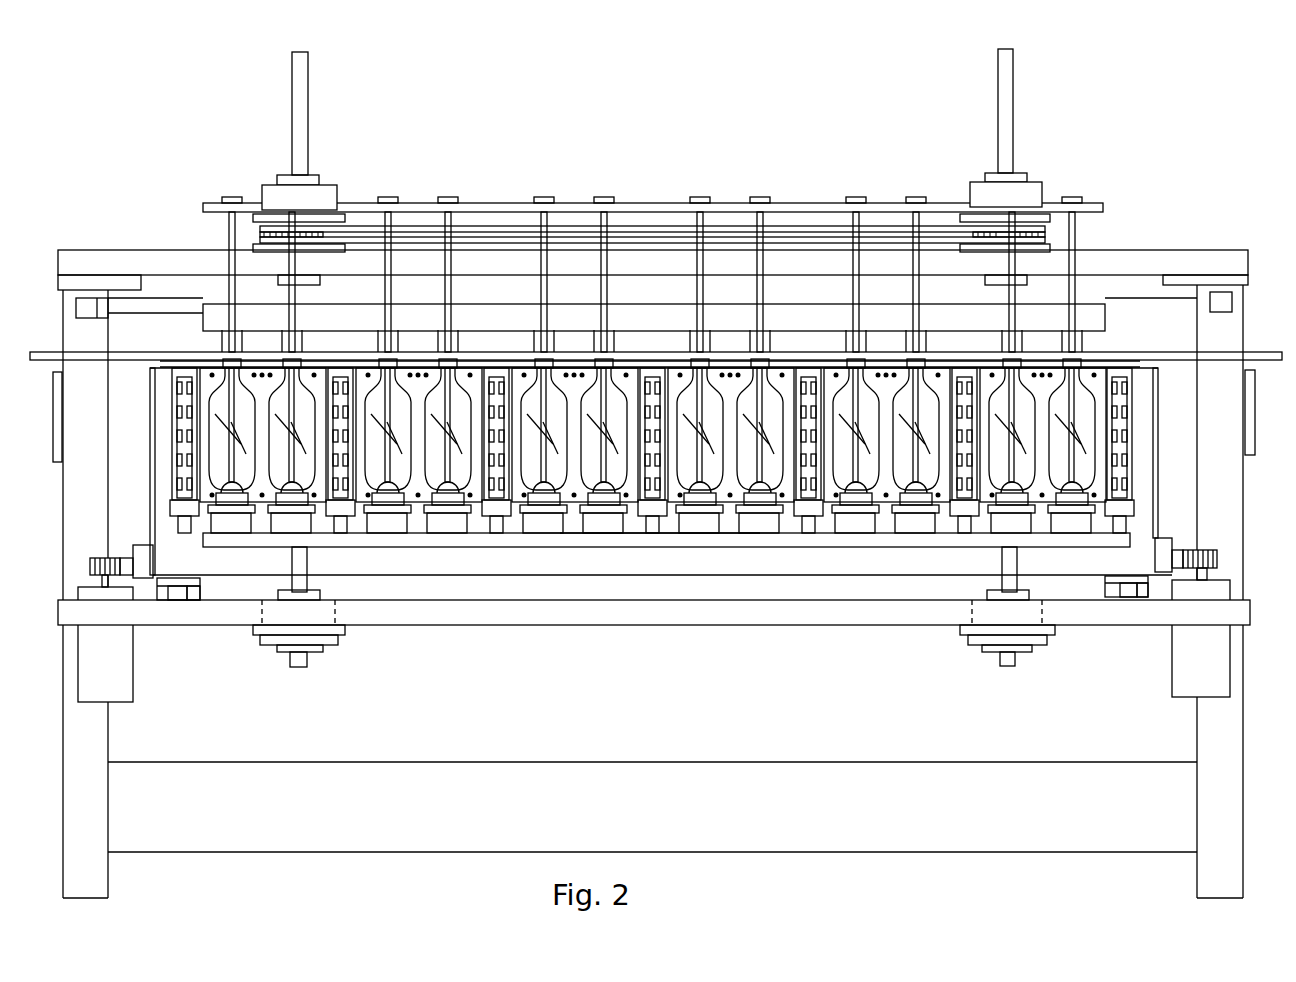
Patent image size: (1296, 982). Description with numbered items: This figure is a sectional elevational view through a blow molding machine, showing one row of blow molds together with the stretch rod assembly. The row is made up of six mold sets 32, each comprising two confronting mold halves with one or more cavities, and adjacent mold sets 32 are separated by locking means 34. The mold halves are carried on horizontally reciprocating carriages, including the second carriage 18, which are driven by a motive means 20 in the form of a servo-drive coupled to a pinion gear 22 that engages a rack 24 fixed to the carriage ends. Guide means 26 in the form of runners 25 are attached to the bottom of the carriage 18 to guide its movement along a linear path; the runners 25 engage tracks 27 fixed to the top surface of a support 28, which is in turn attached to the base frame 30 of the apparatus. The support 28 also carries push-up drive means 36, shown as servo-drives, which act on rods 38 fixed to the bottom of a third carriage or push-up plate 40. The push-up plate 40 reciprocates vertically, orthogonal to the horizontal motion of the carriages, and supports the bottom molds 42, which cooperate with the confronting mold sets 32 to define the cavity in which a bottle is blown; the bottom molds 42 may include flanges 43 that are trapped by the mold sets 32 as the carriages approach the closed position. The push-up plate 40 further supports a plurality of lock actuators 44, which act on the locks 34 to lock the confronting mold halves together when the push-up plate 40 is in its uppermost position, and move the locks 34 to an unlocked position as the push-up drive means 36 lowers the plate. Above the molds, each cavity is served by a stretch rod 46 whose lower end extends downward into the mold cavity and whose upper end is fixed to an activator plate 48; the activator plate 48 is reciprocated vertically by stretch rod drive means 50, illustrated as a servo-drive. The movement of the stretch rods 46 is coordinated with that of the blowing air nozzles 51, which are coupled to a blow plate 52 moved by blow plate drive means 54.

The second carriage 18 is at (1150, 460).
The motive means 20 is at (120, 693).
The pinion gear 22 is at (95, 556).
The rack 24 is at (130, 545).
The runners 25 is at (190, 600).
The guide means 26 is at (1128, 598).
The tracks 27 is at (183, 602).
The support 28 is at (390, 612).
The base frame 30 is at (270, 772).
The mold set 32 is at (888, 505).
The locking means 34 is at (170, 433).
The push-up drive means 36 is at (1000, 655).
The rods 38 is at (307, 563).
The push-up plate 40 is at (608, 542).
The bottom molds 42 is at (262, 512).
The flanges 43 is at (575, 513).
The lock actuators 44 is at (180, 528).
The stretch rod 46 is at (542, 200).
The activator plate 48 is at (880, 204).
The stretch rod drive means 50 is at (337, 195).
The blowing air nozzles 51 is at (213, 340).
The blow plate 52 is at (493, 310).
The blow plate drive means 54 is at (305, 266).